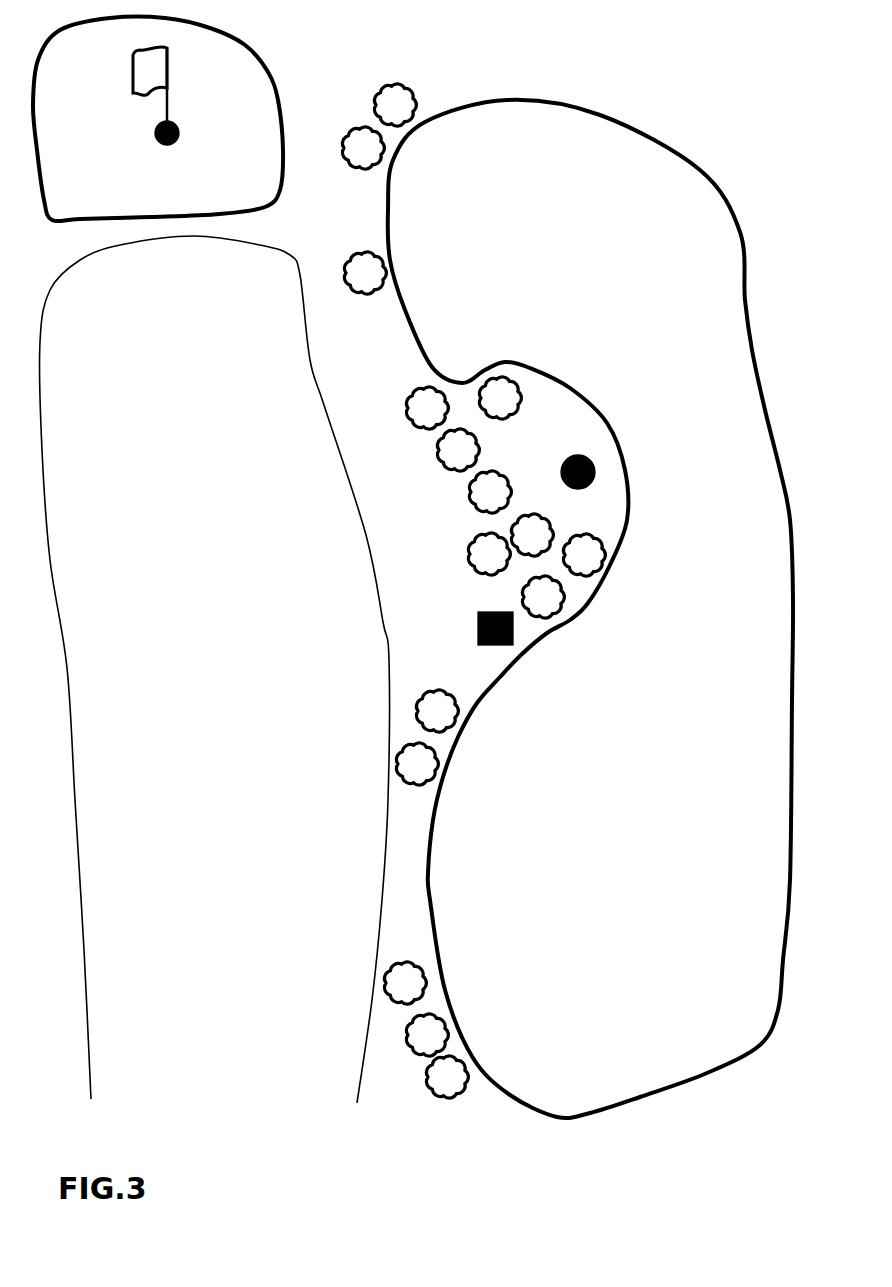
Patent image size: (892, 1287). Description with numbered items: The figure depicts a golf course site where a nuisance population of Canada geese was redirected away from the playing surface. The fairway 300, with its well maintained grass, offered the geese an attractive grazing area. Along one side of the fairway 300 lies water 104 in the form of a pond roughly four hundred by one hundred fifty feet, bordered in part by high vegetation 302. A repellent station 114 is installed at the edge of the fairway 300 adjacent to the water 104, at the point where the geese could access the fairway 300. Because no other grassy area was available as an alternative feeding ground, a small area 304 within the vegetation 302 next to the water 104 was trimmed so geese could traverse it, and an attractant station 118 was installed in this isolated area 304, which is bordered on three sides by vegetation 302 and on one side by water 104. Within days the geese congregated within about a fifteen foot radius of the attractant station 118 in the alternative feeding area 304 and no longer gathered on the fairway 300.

The water 104 is at (590, 609).
The repellent station 114 is at (478, 613).
The attractant station 118 is at (590, 455).
The fairway 300 is at (215, 669).
The vegetation 302 is at (425, 403).
The small area 304 is at (570, 424).